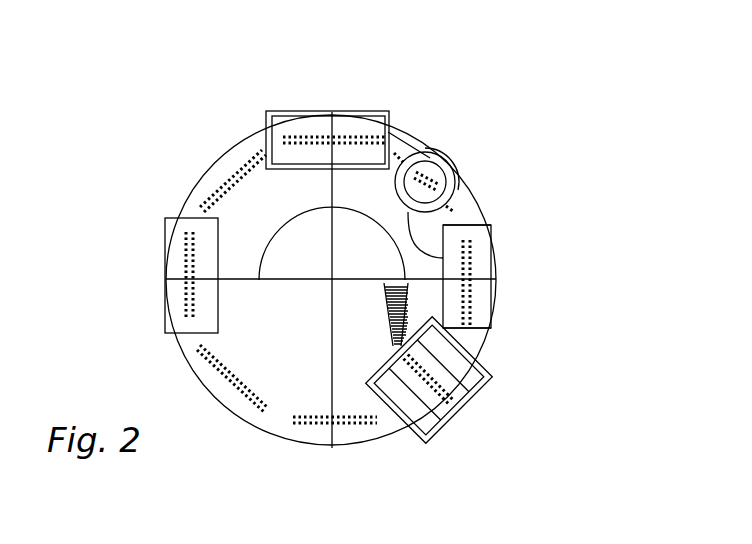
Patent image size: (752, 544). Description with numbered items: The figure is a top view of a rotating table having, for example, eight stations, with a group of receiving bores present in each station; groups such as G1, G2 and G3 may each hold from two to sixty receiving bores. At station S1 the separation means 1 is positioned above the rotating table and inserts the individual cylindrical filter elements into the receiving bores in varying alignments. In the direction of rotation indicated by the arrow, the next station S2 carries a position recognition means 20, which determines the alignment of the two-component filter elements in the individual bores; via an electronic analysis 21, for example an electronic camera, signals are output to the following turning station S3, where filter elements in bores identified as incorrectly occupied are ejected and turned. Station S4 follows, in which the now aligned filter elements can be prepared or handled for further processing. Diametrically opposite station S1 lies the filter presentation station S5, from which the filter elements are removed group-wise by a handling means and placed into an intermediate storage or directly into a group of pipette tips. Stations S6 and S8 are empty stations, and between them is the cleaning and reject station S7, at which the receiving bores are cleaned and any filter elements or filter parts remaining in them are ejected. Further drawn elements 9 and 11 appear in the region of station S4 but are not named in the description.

The separation means 1 is at (282, 110).
The group of receiving bores G1 is at (318, 137).
The station S1 is at (330, 138).
The cleaning and reject station S7 is at (164, 218).
The empty station S8 is at (238, 183).
The empty station S6 is at (215, 347).
The filter presentation station S5 is at (337, 421).
The position recognition means 20 is at (427, 155).
The position recognition station S2 is at (432, 185).
The group of receiving bores G2 is at (460, 206).
The turning station S3 is at (470, 242).
The group of receiving bores G3 is at (470, 266).
The electronic analysis 21 is at (412, 240).
The holder 11 is at (440, 320).
The sensor module 9 is at (437, 405).
The station S4 is at (453, 410).